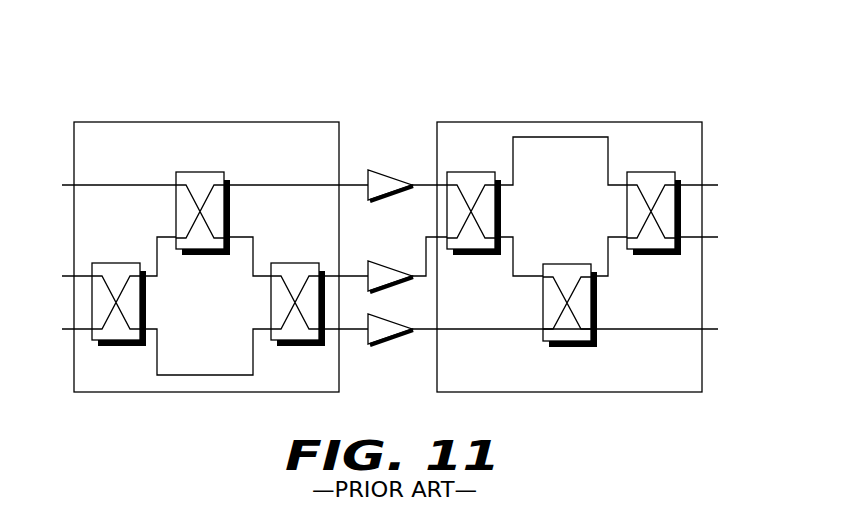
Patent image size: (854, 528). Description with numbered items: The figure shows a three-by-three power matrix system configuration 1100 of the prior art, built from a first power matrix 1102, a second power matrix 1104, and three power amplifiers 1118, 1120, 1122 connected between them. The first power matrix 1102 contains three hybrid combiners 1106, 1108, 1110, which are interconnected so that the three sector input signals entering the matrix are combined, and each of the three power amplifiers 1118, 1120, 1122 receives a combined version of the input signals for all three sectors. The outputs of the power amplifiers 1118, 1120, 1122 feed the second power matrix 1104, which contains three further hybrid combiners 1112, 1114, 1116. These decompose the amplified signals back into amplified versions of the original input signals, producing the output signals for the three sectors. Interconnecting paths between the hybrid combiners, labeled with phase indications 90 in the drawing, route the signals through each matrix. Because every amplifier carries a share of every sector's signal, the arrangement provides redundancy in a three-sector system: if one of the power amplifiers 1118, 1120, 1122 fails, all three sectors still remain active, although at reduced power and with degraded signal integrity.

The 3×3 power matrix system configuration 1100 is at (451, 99).
The first power matrix 1102 is at (206, 122).
The second power matrix 1104 is at (571, 122).
The hybrid combiner 1106 is at (200, 171).
The hybrid combiner 1108 is at (102, 263).
The hybrid combiner 1110 is at (283, 263).
The hybrid combiner 1112 is at (459, 173).
The hybrid combiner 1114 is at (567, 348).
The hybrid combiner 1116 is at (638, 173).
The power amplifier 1118 is at (372, 168).
The power amplifier 1120 is at (372, 260).
The power amplifier 1122 is at (372, 313).
The loop path 90 is at (383, 256).